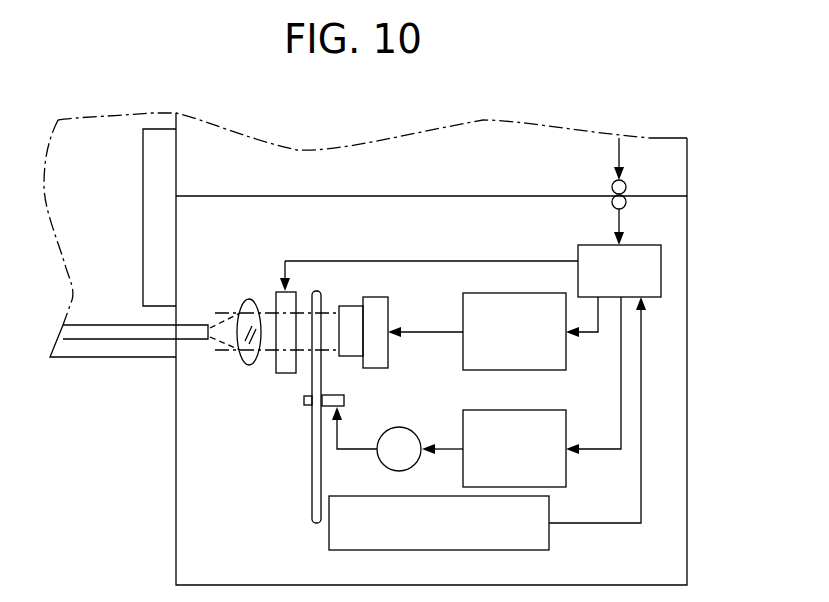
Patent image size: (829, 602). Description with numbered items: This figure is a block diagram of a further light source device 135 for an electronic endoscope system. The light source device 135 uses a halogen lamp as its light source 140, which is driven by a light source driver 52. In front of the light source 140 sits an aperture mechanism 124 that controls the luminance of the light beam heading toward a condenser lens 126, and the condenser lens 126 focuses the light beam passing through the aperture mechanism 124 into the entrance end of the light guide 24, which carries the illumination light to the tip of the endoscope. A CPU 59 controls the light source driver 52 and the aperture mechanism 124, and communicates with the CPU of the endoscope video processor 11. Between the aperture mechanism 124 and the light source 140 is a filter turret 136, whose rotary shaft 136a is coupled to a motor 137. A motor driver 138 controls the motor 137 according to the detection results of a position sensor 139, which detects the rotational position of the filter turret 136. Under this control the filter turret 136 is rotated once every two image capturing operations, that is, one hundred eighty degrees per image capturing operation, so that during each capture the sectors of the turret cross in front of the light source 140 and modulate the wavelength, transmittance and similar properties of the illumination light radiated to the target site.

The endoscope video processor 11 is at (700, 172).
The light guide 24 is at (117, 332).
The light source driver 52 is at (497, 294).
The CPU 59 is at (590, 245).
The aperture mechanism 124 is at (277, 292).
The condenser lens 126 is at (246, 300).
The light source device 135 is at (162, 557).
The filter turret 136 is at (312, 470).
The rotary shaft 136a is at (340, 397).
The motor 137 is at (404, 432).
The motor driver 138 is at (508, 410).
The position sensor 139 is at (404, 550).
The light source 140 is at (342, 308).